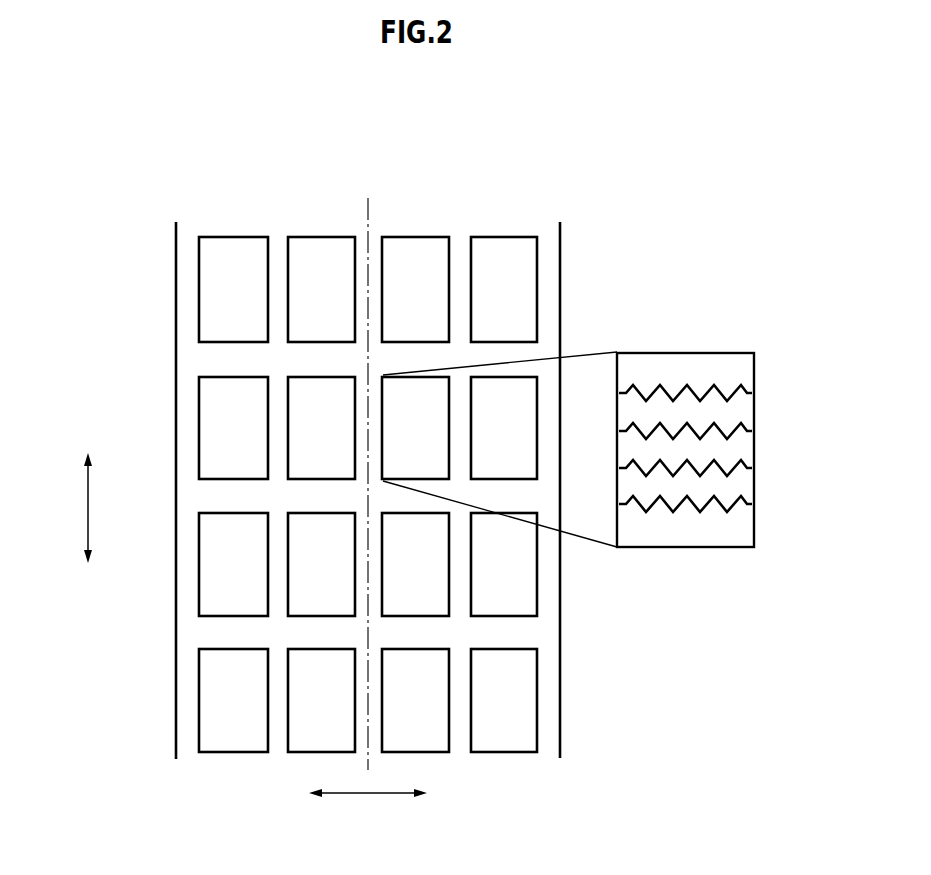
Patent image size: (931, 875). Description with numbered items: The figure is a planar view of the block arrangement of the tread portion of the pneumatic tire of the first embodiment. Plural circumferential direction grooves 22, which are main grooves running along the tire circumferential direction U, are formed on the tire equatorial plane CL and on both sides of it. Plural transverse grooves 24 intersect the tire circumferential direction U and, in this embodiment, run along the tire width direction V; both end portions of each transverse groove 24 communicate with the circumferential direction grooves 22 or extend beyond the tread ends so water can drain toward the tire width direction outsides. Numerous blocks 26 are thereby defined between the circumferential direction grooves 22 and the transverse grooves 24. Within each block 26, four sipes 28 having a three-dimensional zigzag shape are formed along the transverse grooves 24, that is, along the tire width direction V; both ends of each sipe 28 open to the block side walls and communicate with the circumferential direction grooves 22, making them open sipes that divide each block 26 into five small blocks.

The circumferential direction groove 22 is at (187, 250).
The transverse groove 24 is at (212, 360).
The block 26 is at (749, 252).
The sipe 28 is at (718, 390).
The tire equatorial plane CL is at (370, 212).
The tire circumferential direction U is at (85, 505).
The tire width direction V is at (368, 793).